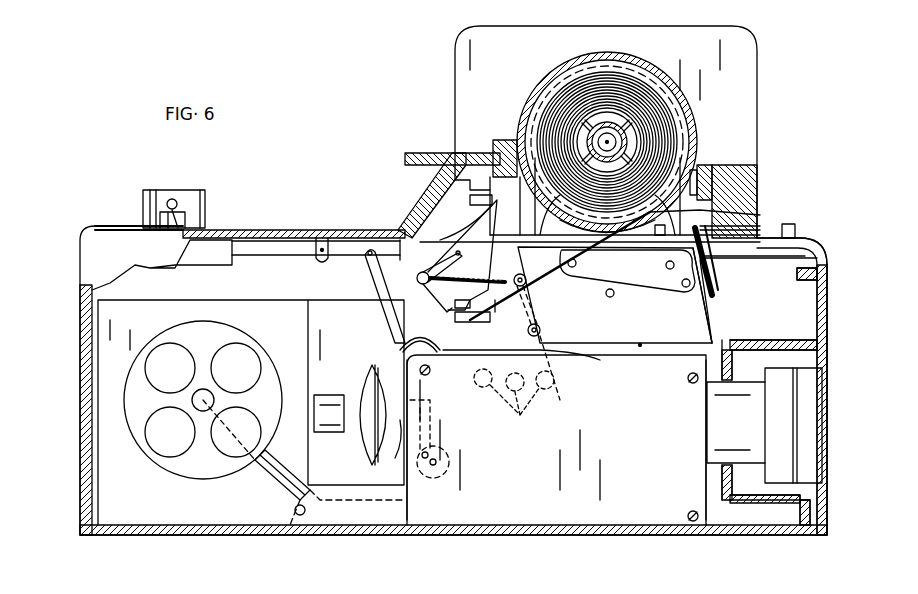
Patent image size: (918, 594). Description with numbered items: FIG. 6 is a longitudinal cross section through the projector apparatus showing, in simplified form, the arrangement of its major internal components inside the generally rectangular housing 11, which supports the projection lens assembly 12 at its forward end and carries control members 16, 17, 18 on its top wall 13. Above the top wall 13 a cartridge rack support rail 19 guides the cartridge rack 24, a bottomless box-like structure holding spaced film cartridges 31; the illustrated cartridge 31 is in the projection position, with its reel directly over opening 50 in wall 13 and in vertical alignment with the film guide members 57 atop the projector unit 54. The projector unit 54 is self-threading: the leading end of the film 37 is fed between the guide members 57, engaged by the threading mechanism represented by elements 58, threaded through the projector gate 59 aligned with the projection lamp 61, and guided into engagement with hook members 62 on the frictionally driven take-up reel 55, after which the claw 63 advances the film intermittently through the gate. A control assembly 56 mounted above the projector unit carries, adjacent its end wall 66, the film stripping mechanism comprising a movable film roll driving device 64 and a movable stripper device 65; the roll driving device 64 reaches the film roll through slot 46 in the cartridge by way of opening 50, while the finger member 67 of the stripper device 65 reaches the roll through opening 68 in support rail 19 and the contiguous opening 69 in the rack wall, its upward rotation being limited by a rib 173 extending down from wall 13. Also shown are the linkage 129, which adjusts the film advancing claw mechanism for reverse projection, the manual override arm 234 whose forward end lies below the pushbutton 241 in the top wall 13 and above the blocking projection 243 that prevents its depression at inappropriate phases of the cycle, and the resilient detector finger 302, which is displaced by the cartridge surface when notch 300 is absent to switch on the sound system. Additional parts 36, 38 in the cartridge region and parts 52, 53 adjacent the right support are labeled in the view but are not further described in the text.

The housing 11 is at (80, 380).
The projection lens assembly 12 is at (812, 437).
The top wall 13 is at (256, 232).
The control member 16 is at (165, 195).
The control member 17 is at (158, 215).
The control member 18 is at (165, 197).
The cartridge rack support rail 19 is at (452, 160).
The cartridge rack 24 is at (518, 173).
The film cartridge 31 is at (688, 100).
The tape wound on reel 36 is at (660, 85).
The reel hub 38 is at (668, 124).
The film 37 is at (548, 258).
The slot 46 is at (720, 222).
The opening 50 is at (612, 235).
The right support block 52 is at (722, 228).
The pressure pad 53 is at (718, 262).
The projector unit 54 is at (640, 530).
The take-up reel 55 is at (140, 440).
The control assembly 56 is at (710, 312).
The guide members 57 is at (520, 348).
The threading mechanism 58 is at (518, 416).
The projector gate 59 is at (395, 458).
The projection lamp 61 is at (362, 380).
The hook members 62 is at (236, 393).
The claw 63 is at (430, 432).
The film roll driving device 64 is at (646, 283).
The stripper device 65 is at (538, 305).
The end wall 66 is at (705, 330).
The finger member 67 is at (432, 276).
The opening 68 is at (466, 236).
The opening 69 is at (490, 213).
The linkage 129 is at (368, 282).
The rib 173 is at (478, 200).
The arm 234 is at (780, 260).
The manual override pushbutton 241 is at (797, 231).
The blocking projection 243 is at (806, 272).
The notch 300 is at (770, 230).
The resilient detector finger 302 is at (657, 238).